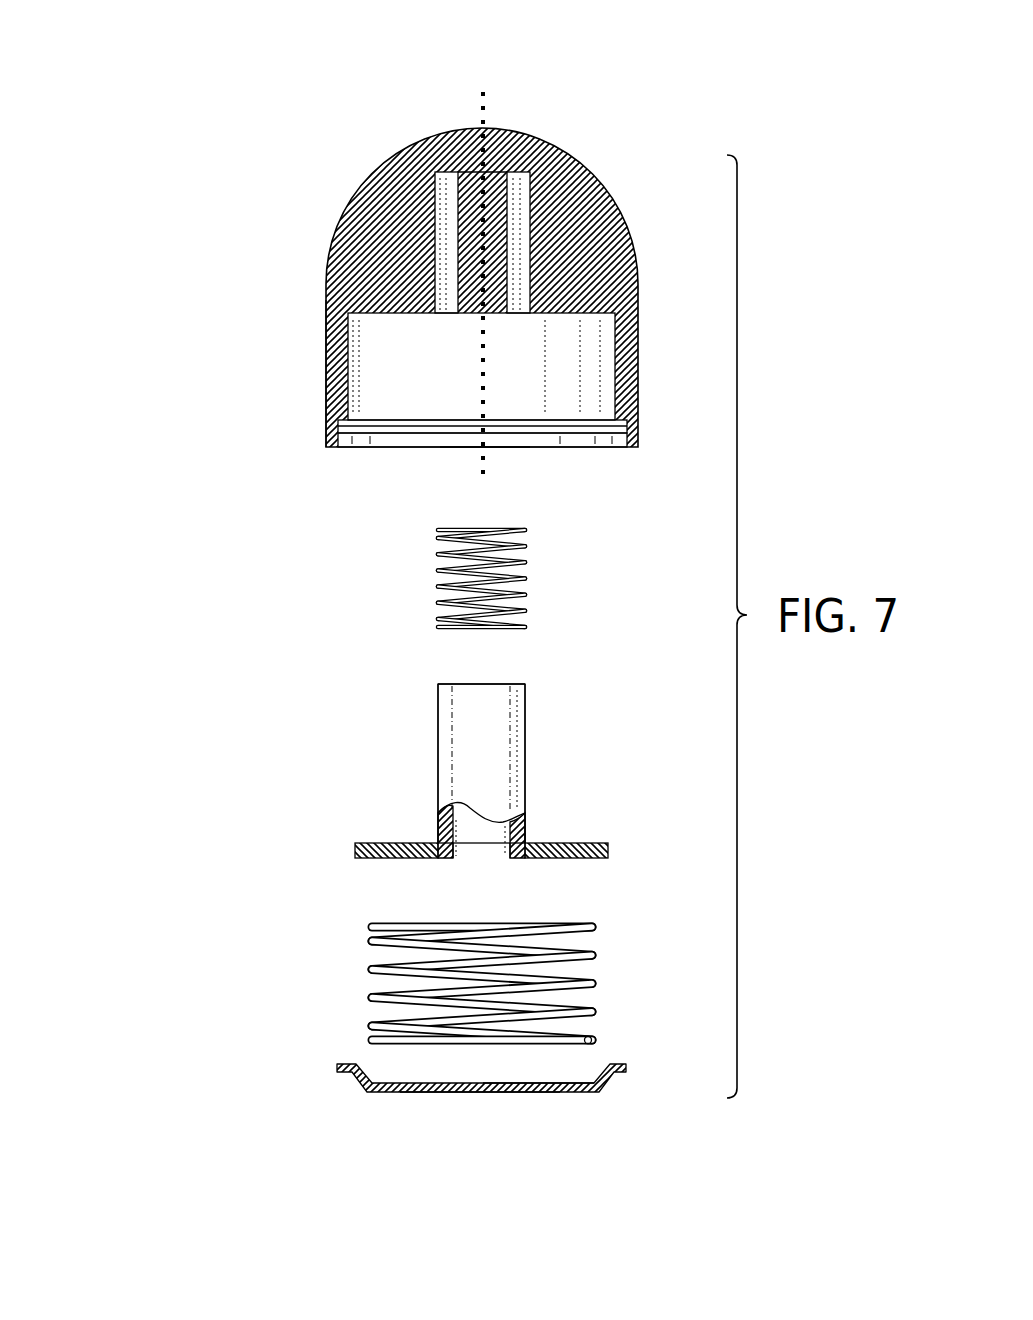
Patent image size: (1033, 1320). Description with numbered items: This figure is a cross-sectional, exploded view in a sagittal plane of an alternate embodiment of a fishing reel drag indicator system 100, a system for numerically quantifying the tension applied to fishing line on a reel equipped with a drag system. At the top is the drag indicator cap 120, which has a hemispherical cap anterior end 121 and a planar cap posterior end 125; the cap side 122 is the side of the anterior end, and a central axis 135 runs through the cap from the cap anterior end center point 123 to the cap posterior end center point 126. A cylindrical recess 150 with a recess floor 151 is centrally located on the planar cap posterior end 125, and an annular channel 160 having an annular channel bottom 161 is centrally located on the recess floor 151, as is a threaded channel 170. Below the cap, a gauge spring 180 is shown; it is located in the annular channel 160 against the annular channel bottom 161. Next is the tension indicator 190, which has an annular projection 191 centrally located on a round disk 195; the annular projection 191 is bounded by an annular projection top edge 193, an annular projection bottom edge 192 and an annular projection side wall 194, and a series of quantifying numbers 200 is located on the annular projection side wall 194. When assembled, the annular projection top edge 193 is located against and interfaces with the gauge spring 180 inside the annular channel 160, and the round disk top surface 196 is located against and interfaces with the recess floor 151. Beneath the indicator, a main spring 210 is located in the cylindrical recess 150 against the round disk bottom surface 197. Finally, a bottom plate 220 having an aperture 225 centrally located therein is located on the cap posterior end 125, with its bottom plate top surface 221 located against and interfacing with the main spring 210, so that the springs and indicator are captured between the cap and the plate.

The fishing reel drag indicator system 100 is at (148, 95).
The drag indicator cap 120 is at (523, 128).
The cap anterior end 121 is at (407, 145).
The cap side 122 is at (325, 413).
The cap anterior end center point 123 is at (478, 126).
The cap posterior end 125 is at (336, 443).
The cap posterior end center point 126 is at (480, 450).
The central axis 135 is at (487, 465).
The cylindrical recess 150 is at (343, 369).
The recess floor 151 is at (367, 313).
The annular channel 160 is at (425, 247).
The annular channel bottom 161 is at (435, 175).
The threaded channel 170 is at (505, 200).
The gauge spring 180 is at (438, 550).
The tension indicator 190 is at (528, 724).
The annular projection 191 is at (437, 684).
The annular projection bottom edge 192 is at (522, 842).
The annular projection top edge 193 is at (508, 684).
The annular projection side wall 194 is at (437, 765).
The round disk 195 is at (355, 851).
The round disk top surface 196 is at (386, 845).
The round disk bottom surface 197 is at (582, 858).
The quantifying number 200 is at (488, 782).
The main spring 210 is at (372, 930).
The bottom plate 220 is at (345, 1066).
The bottom plate top surface 221 is at (560, 1085).
The aperture 225 is at (482, 1095).